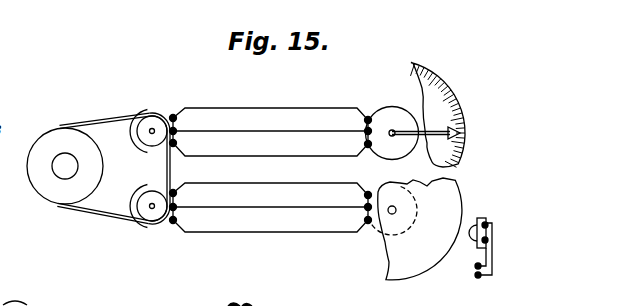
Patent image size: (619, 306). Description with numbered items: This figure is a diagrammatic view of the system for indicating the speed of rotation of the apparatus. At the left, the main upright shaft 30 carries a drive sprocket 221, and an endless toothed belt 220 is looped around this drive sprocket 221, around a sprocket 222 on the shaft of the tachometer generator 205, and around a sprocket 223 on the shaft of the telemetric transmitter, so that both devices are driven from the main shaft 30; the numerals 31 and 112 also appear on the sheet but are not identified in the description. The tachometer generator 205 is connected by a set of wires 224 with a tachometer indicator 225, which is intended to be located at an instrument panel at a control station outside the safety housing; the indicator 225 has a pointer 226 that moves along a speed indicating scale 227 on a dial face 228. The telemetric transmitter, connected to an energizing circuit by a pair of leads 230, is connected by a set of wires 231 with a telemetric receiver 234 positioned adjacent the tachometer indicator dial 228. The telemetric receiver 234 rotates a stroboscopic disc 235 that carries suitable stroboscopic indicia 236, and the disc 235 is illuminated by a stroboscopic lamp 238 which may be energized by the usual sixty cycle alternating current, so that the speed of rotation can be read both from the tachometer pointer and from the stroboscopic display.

The upright shaft 30 is at (58, 155).
The shaft 31 is at (0, 115).
The frame 112 is at (37, 298).
The tachometer generator 205 is at (148, 108).
The toothed belt 220 is at (112, 200).
The drive sprocket 221 is at (53, 192).
The sprocket 222 is at (150, 136).
The sprocket 223 is at (152, 214).
The set of wires 224 is at (287, 97).
The tachometer indicator 225 is at (368, 117).
The pointer 226 is at (418, 128).
The speed indicating scale 227 is at (426, 77).
The dial face 228 is at (457, 97).
The pair of leads 230 is at (95, 233).
The set of wires 231 is at (268, 232).
The telemetric receiver 234 is at (370, 228).
The stroboscopic disc 235 is at (394, 262).
The stroboscopic indicia 236 is at (407, 281).
The stroboscopic lamp 238 is at (468, 242).